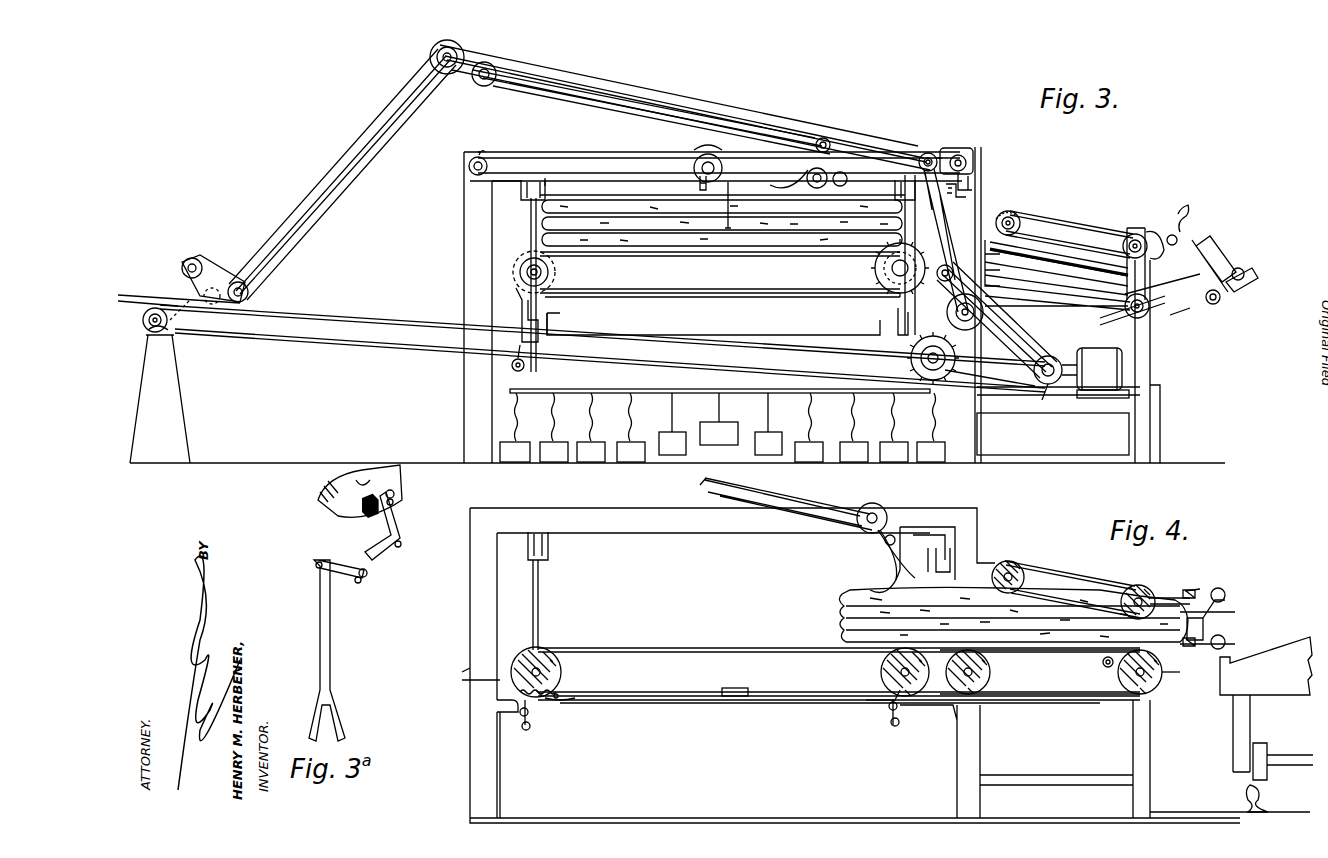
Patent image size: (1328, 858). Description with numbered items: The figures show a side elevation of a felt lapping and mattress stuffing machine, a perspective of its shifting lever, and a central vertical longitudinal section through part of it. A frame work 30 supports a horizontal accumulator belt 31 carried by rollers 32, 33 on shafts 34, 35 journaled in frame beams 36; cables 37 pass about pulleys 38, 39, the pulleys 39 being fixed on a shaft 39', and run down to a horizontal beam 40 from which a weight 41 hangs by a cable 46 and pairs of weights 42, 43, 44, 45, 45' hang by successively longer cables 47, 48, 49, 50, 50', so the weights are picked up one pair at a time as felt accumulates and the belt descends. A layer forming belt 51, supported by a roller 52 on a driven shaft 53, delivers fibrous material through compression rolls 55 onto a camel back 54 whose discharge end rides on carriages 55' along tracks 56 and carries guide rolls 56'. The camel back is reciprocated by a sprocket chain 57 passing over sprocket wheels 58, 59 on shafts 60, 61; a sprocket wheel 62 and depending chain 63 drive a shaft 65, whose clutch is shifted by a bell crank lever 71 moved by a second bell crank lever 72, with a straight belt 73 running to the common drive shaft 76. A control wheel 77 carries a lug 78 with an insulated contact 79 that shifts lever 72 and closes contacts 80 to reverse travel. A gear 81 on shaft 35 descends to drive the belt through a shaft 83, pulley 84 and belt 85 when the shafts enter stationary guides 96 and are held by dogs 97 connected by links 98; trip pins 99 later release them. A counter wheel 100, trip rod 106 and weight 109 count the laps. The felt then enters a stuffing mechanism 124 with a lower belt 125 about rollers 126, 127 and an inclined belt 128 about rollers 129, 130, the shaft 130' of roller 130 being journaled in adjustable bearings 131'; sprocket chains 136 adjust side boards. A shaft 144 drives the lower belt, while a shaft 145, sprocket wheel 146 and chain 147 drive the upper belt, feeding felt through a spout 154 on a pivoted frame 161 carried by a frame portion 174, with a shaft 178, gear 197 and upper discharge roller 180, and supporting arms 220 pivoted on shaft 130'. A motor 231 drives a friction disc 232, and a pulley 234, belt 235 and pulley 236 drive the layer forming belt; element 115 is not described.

In FIG. 3, the frame work 30 is at (464, 249).
In FIG. 4, the frame work 30 is at (470, 618).
In FIG. 3, the accumulator belt 31 is at (681, 297).
In FIG. 4, the accumulator belt 31 is at (633, 648).
In FIG. 3, the roller 32 is at (525, 282).
In FIG. 4, the roller 32 is at (563, 672).
In FIG. 4, the roller 33 is at (882, 674).
In FIG. 3, the shaft 34 is at (512, 270).
In FIG. 4, the shaft 34 is at (512, 668).
In FIG. 3, the shaft 35 is at (892, 264).
In FIG. 4, the shaft 35 is at (862, 712).
In FIG. 3, the frame beams 36 is at (722, 244).
In FIG. 4, the frame beams 36 is at (620, 671).
In FIG. 3, the cables 37 is at (528, 236).
In FIG. 4, the cables 37 is at (540, 597).
In FIG. 4, the pulleys 38 is at (530, 555).
In FIG. 3, the pulleys 39 is at (709, 202).
In FIG. 3, the shaft 39' is at (548, 159).
In FIG. 3, the horizontal beam 40 is at (652, 389).
In FIG. 3, the weight 41 is at (719, 433).
In FIG. 3, the weights 42 is at (672, 452).
In FIG. 3, the weights 43 is at (630, 455).
In FIG. 3, the weights 44 is at (592, 455).
In FIG. 3, the weights 45 is at (724, 460).
In FIG. 3, the weights 45' is at (728, 461).
In FIG. 3, the cable 46 is at (731, 407).
In FIG. 3, the cables 47 is at (732, 412).
In FIG. 3, the cables 48 is at (732, 417).
In FIG. 3, the cables 49 is at (896, 421).
In FIG. 3, the cables 50 is at (734, 417).
In FIG. 3, the cables 50' is at (737, 417).
In FIG. 3, the layer forming belt 51 is at (135, 294).
In FIG. 3, the roller 52 is at (158, 306).
In FIG. 3, the driven shaft 53 is at (172, 340).
In FIG. 3, the camel back 54 is at (284, 208).
In FIG. 3, the compression rolls 55 is at (209, 282).
In FIG. 4, the compression rolls 55 is at (798, 525).
In FIG. 3, the carriages 55' is at (651, 108).
In FIG. 3, the tracks 56 is at (716, 156).
In FIG. 3, the guide rolls 56' is at (809, 152).
In FIG. 4, the guide rolls 56' is at (874, 554).
In FIG. 3, the sprocket chain 57 is at (856, 158).
In FIG. 3, the sprocket wheel 58 is at (480, 153).
In FIG. 3, the sprocket wheel 59 is at (931, 153).
In FIG. 3, the transverse shaft 60 is at (469, 164).
In FIG. 3, the transverse shaft 61 is at (946, 152).
In FIG. 3, the sprocket wheel 62 is at (924, 155).
In FIG. 3, the sprocket chain 63 is at (974, 180).
In FIG. 3, the transverse shaft 65 is at (948, 288).
In FIG. 3, the bell crank lever 71 is at (994, 208).
In FIG. 3A, the bell crank lever 71 is at (330, 613).
In FIG. 3, the bell crank lever 72 is at (975, 192).
In FIG. 3A, the bell crank lever 72 is at (402, 526).
In FIG. 3, the straight belt 73 is at (1020, 336).
In FIG. 3, the common drive shaft 76 is at (1046, 384).
In FIG. 3, the control wheel 77 is at (974, 155).
In FIG. 3A, the control wheel 77 is at (400, 478).
In FIG. 3A, the lug 78 is at (362, 512).
In FIG. 3A, the metallic contact 79 is at (372, 516).
In FIG. 3A, the contacts 80 is at (396, 496).
In FIG. 3, the gear 81 is at (878, 282).
In FIG. 3, the shaft 83 is at (960, 375).
In FIG. 3, the pulley 84 is at (966, 385).
In FIG. 3, the belt 85 is at (1038, 370).
In FIG. 3, the stationary guides or supports 96 is at (556, 314).
In FIG. 4, the stationary guides or supports 96 is at (570, 698).
In FIG. 3, the holding dogs 97 is at (520, 304).
In FIG. 4, the holding dogs 97 is at (512, 690).
In FIG. 4, the links 98 is at (746, 700).
In FIG. 4, the trip pins 99 is at (566, 700).
In FIG. 3, the counter wheel 100 is at (711, 150).
In FIG. 3, the trip rod 106 is at (732, 186).
In FIG. 3, the weight 109 is at (698, 186).
In FIG. 4, the plate 115 is at (725, 688).
In FIG. 3, the stuffing mechanism 124 is at (1156, 210).
In FIG. 4, the stuffing mechanism 124 is at (1079, 566).
In FIG. 3, the lower endless belt 125 is at (1050, 302).
In FIG. 4, the lower endless belt 125 is at (1052, 690).
In FIG. 4, the roller 126 is at (980, 688).
In FIG. 4, the roller 127 is at (1128, 686).
In FIG. 3, the inclined belt 128 is at (1072, 212).
In FIG. 4, the inclined belt 128 is at (1100, 584).
In FIG. 4, the roller 129 is at (1014, 562).
In FIG. 4, the roller 130 is at (1141, 590).
In FIG. 3, the shaft 130' is at (1184, 234).
In FIG. 3, the vertically adjustable bearings 131' is at (1128, 245).
In FIG. 3, the sprocket chains 136 is at (1056, 276).
In FIG. 3, the shaft 144 is at (1148, 316).
In FIG. 4, the shaft 144 is at (1160, 676).
In FIG. 3, the shaft 145 is at (1016, 208).
In FIG. 3, the sprocket wheel 146 is at (1024, 216).
In FIG. 3, the sprocket chain 147 is at (1004, 250).
In FIG. 3, the spout 154 is at (1218, 258).
In FIG. 4, the spout 154 is at (1185, 610).
In FIG. 3, the spout carrying frame 161 is at (1244, 274).
In FIG. 3, the portion of the frame work 174 is at (1180, 310).
In FIG. 3, the shaft 178 is at (1220, 297).
In FIG. 3, the upper discharge roller 180 is at (1244, 278).
In FIG. 3, the gear 197 is at (1218, 305).
In FIG. 3, the supporting arms 220 is at (1188, 205).
In FIG. 3, the motor 231 is at (1110, 375).
In FIG. 3, the friction disc 232 is at (1128, 396).
In FIG. 3, the pulley 234 is at (1054, 386).
In FIG. 3, the belt 235 is at (340, 318).
In FIG. 3, the pulley 236 is at (152, 345).